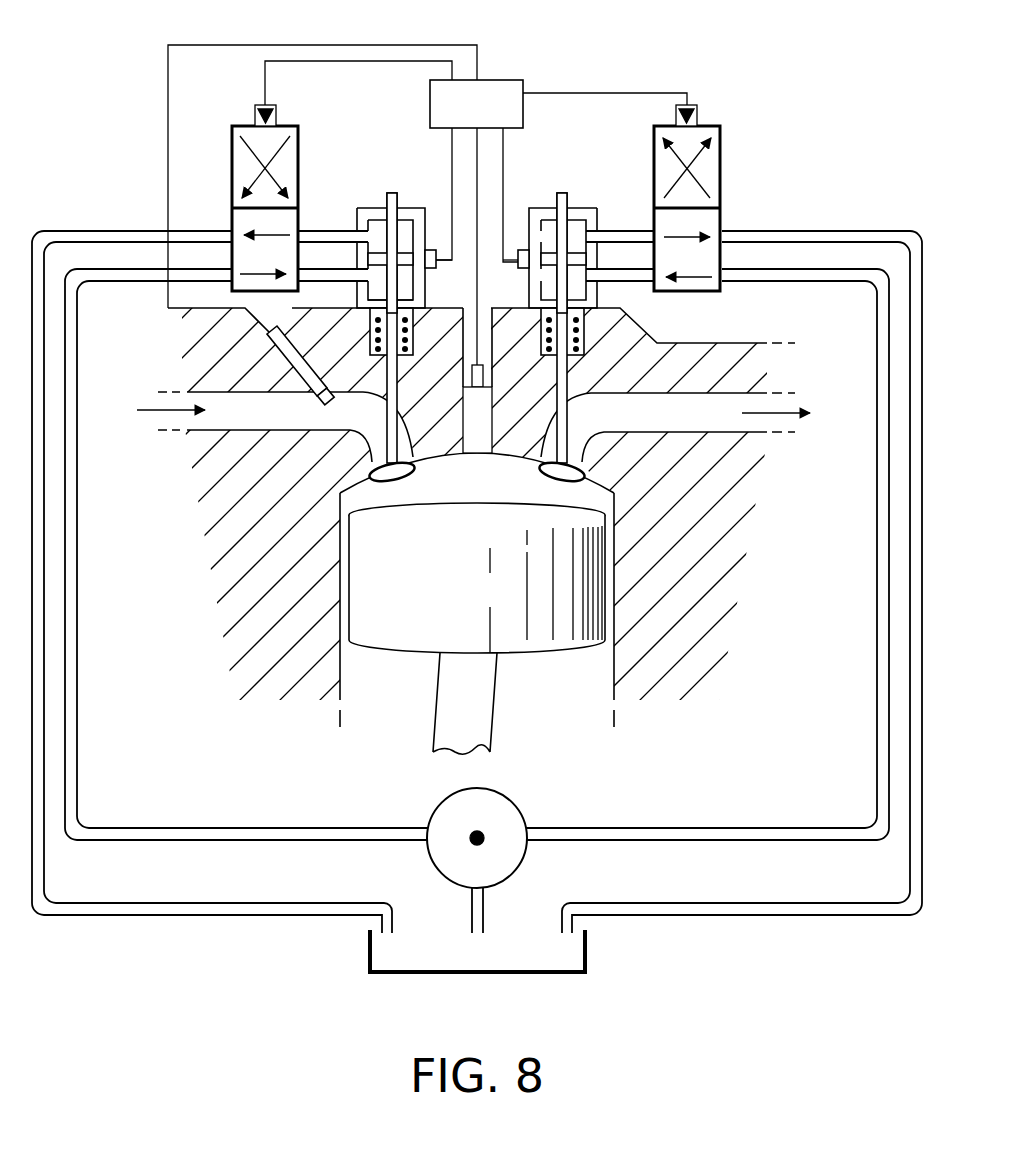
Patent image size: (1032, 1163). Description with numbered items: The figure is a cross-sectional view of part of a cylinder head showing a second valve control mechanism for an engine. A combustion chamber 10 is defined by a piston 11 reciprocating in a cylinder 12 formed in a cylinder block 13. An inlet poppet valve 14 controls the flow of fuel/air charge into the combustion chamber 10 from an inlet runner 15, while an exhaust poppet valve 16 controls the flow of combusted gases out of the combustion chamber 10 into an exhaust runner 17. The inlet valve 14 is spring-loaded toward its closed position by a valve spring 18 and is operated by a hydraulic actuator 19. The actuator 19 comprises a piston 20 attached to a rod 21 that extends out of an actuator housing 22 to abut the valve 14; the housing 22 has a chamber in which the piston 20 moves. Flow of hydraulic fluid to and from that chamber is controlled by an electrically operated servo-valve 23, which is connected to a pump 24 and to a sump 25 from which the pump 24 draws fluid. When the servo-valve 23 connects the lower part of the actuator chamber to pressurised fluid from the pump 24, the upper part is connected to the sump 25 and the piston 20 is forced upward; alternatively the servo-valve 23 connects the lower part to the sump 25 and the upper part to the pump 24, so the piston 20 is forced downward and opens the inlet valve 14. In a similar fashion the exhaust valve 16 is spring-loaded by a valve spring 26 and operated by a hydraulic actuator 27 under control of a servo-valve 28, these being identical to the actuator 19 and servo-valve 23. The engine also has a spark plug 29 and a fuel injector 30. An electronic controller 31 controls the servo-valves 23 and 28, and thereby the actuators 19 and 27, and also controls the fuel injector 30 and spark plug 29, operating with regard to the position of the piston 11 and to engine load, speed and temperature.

The combustion chamber 10 is at (464, 490).
The piston 11 is at (469, 602).
The cylinder 12 is at (615, 588).
The cylinder block 13 is at (697, 544).
The inlet poppet valve 14 is at (388, 455).
The inlet runner 15 is at (220, 422).
The exhaust poppet valve 16 is at (568, 455).
The exhaust runner 17 is at (665, 425).
The valve spring 18 is at (368, 322).
The hydraulic actuator 19 is at (358, 210).
The piston 20 is at (402, 262).
The rod 21 is at (390, 293).
The actuator housing 22 is at (413, 210).
The servo-valve 23 is at (233, 127).
The pump 24 is at (503, 808).
The sump 25 is at (430, 973).
The valve spring 26 is at (588, 351).
The hydraulic actuator 27 is at (545, 210).
The servo-valve 28 is at (721, 128).
The spark plug 29 is at (480, 389).
The fuel injector 30 is at (315, 386).
The electronic controller 31 is at (463, 115).